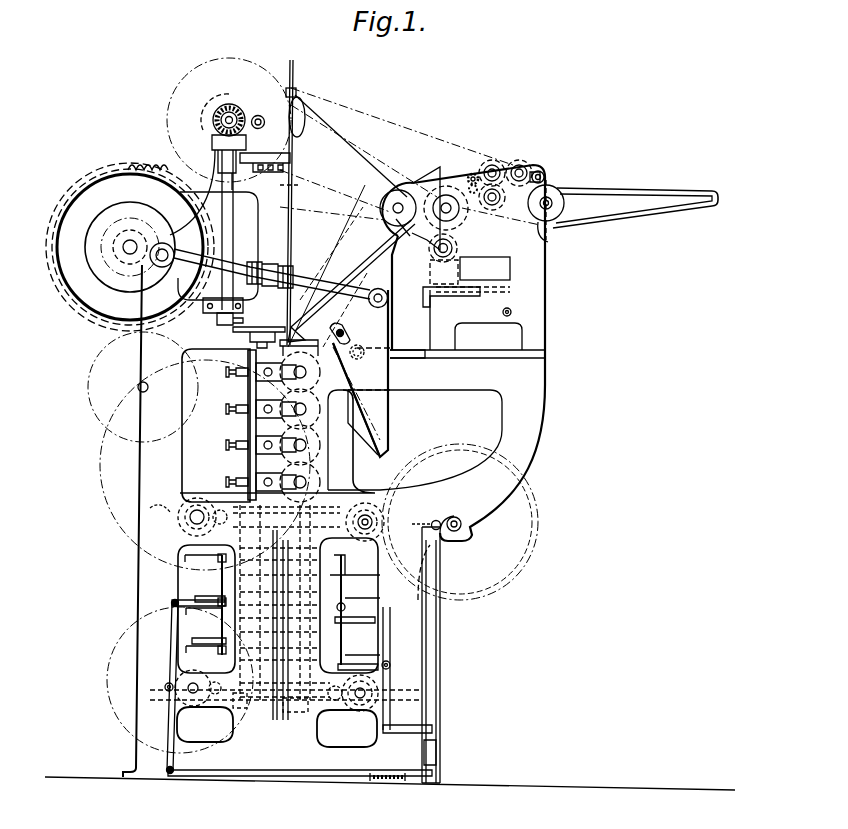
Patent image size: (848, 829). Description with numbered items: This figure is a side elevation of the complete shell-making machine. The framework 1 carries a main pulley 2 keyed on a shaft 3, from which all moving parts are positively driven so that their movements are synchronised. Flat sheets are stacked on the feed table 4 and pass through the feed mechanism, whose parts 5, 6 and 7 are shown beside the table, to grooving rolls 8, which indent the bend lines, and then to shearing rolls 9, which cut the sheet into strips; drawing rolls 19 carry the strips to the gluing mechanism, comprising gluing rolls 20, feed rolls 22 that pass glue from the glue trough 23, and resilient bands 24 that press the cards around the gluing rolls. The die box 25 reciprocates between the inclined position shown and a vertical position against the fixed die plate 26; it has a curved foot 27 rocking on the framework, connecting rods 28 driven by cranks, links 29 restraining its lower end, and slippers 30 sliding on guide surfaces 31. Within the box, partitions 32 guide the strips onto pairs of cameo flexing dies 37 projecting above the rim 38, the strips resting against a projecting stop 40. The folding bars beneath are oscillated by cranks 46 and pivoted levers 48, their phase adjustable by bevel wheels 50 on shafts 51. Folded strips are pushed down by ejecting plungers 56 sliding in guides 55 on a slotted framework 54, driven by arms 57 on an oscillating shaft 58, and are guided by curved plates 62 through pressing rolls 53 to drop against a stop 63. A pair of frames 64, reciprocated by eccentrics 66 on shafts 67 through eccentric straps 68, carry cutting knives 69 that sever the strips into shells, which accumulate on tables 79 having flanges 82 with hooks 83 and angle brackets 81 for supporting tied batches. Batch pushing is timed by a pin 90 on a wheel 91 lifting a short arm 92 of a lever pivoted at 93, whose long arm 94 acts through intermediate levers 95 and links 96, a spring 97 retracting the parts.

The framework 1 is at (334, 471).
The main pulley 2 is at (57, 402).
The shaft 3 is at (141, 391).
The feed table 4 is at (635, 208).
The roller 5 is at (551, 186).
The bracket 6 is at (551, 232).
The roller 7 is at (538, 170).
The grooving rolls 8 is at (519, 164).
The shearing rolls 9 is at (492, 164).
The drawing rolls 19 is at (471, 172).
The gluing rolls 20 is at (462, 220).
The feed rolls 22 is at (454, 249).
The glue trough 23 is at (470, 274).
The resilient bands 24 is at (410, 180).
The die box 25 is at (378, 288).
The die plate 26 is at (294, 187).
The curved foot 27 is at (328, 345).
The connecting rods 28 is at (302, 283).
The links 29 is at (347, 352).
The slippers 30 is at (384, 437).
The guide surfaces 31 is at (405, 360).
The partitions 32 is at (388, 248).
The cameo flexing dies 37 is at (390, 233).
The rim 38 is at (358, 246).
The projecting stop 40 is at (310, 325).
The cranks 46 is at (240, 336).
The pivoted levers 48 is at (246, 305).
The bevel wheels 50 is at (213, 124).
The shafts 51 is at (234, 232).
The pressing rolls 53 is at (248, 425).
The slotted framework 54 is at (286, 93).
The guides 55 is at (302, 98).
The ejecting plungers 56 is at (294, 76).
The arms 57 is at (326, 122).
The shaft 58 is at (232, 105).
The curved plates 62 is at (226, 372).
The stop 63 is at (275, 725).
The frames 64 is at (250, 705).
The eccentrics 66 is at (180, 520).
The shafts 67 is at (192, 514).
The eccentric straps 68 is at (165, 548).
The cutting knives 69 is at (298, 630).
The tables 79 is at (206, 598).
The angle brackets 81 is at (346, 564).
The flanges 82 is at (220, 558).
The hooks 83 is at (185, 560).
The pin 90 is at (433, 523).
The wheel 91 is at (420, 556).
The short arm 92 is at (423, 570).
The lever pivot 93 is at (452, 538).
The long arm 94 is at (441, 642).
The intermediate levers 95 is at (170, 642).
The links 96 is at (398, 742).
The spring 97 is at (388, 783).